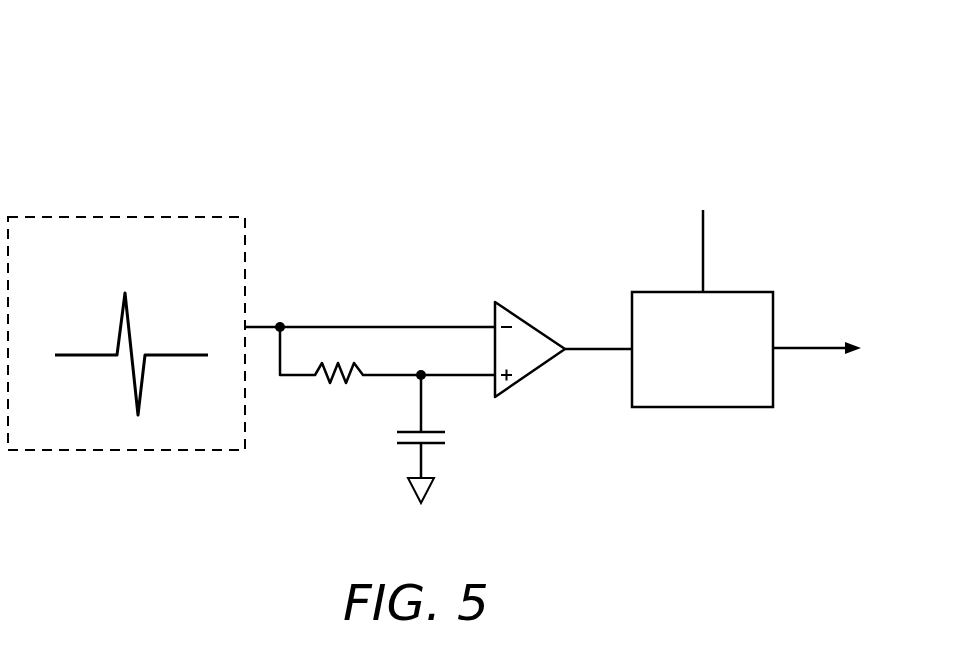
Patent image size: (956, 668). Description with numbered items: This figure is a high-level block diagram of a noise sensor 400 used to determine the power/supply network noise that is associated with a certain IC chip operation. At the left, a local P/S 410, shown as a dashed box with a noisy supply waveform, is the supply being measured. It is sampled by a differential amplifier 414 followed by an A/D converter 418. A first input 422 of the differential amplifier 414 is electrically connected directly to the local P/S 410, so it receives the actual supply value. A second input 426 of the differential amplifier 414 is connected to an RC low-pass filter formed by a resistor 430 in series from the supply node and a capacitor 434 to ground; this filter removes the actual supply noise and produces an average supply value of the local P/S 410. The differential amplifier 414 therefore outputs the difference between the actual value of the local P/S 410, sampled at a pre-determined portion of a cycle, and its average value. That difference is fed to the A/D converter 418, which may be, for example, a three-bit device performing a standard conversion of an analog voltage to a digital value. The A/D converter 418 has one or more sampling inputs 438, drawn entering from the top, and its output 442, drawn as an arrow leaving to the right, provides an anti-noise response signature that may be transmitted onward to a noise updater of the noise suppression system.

The noise sensor 400 is at (212, 68).
The local P/S 410 is at (126, 333).
The differential amplifier 414 is at (547, 363).
The A/D converter 418 is at (702, 349).
The first input 422 is at (475, 325).
The second input 426 is at (475, 373).
The resistor 430 is at (340, 387).
The capacitor 434 is at (433, 446).
The sampling input 438 is at (700, 237).
The output 442 is at (812, 345).